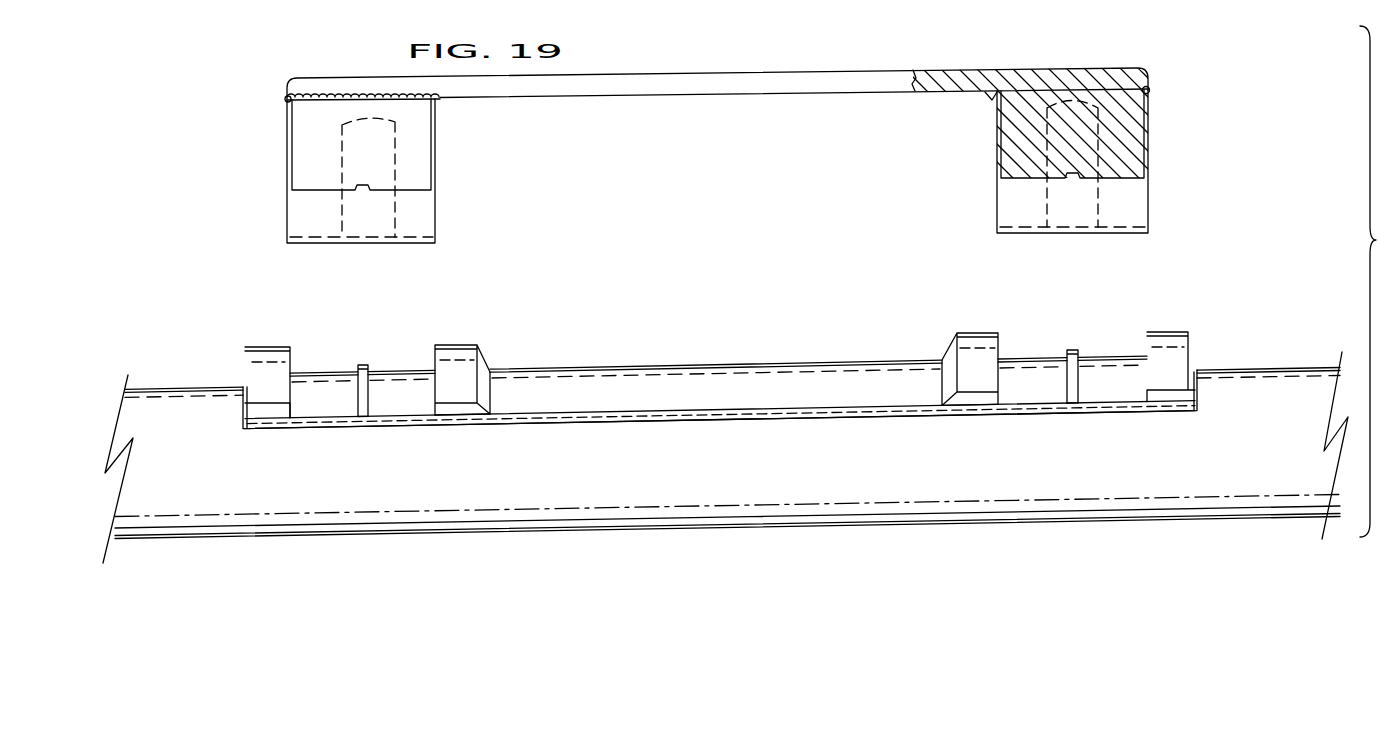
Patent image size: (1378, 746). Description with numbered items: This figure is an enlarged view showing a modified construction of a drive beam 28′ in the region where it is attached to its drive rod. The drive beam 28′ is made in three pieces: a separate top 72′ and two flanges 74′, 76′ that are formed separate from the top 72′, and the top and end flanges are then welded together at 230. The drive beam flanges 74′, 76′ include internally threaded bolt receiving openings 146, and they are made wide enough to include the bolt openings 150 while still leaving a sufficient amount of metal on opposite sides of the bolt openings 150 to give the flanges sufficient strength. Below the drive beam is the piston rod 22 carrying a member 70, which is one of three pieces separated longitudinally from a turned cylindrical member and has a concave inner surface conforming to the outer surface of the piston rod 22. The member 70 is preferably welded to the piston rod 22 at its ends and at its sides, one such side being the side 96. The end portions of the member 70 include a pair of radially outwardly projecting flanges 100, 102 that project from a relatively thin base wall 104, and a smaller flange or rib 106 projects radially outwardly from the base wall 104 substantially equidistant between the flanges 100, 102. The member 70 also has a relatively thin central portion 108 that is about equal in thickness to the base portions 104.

The piston rod 22 is at (740, 468).
The drive beam 28′ is at (728, 70).
The member 70 is at (668, 360).
The top 72′ is at (638, 75).
The drive beam flange 74′ is at (1008, 203).
The drive beam flange 76′ is at (432, 158).
The side 96 is at (572, 426).
The flange 100 is at (468, 344).
The flange 102 is at (263, 346).
The base wall 104 is at (342, 403).
The rib 106 is at (363, 364).
The central portion 108 is at (762, 362).
The bolt receiving opening 146 is at (350, 150).
The bolt opening 150 is at (370, 215).
The weld 230 is at (338, 95).